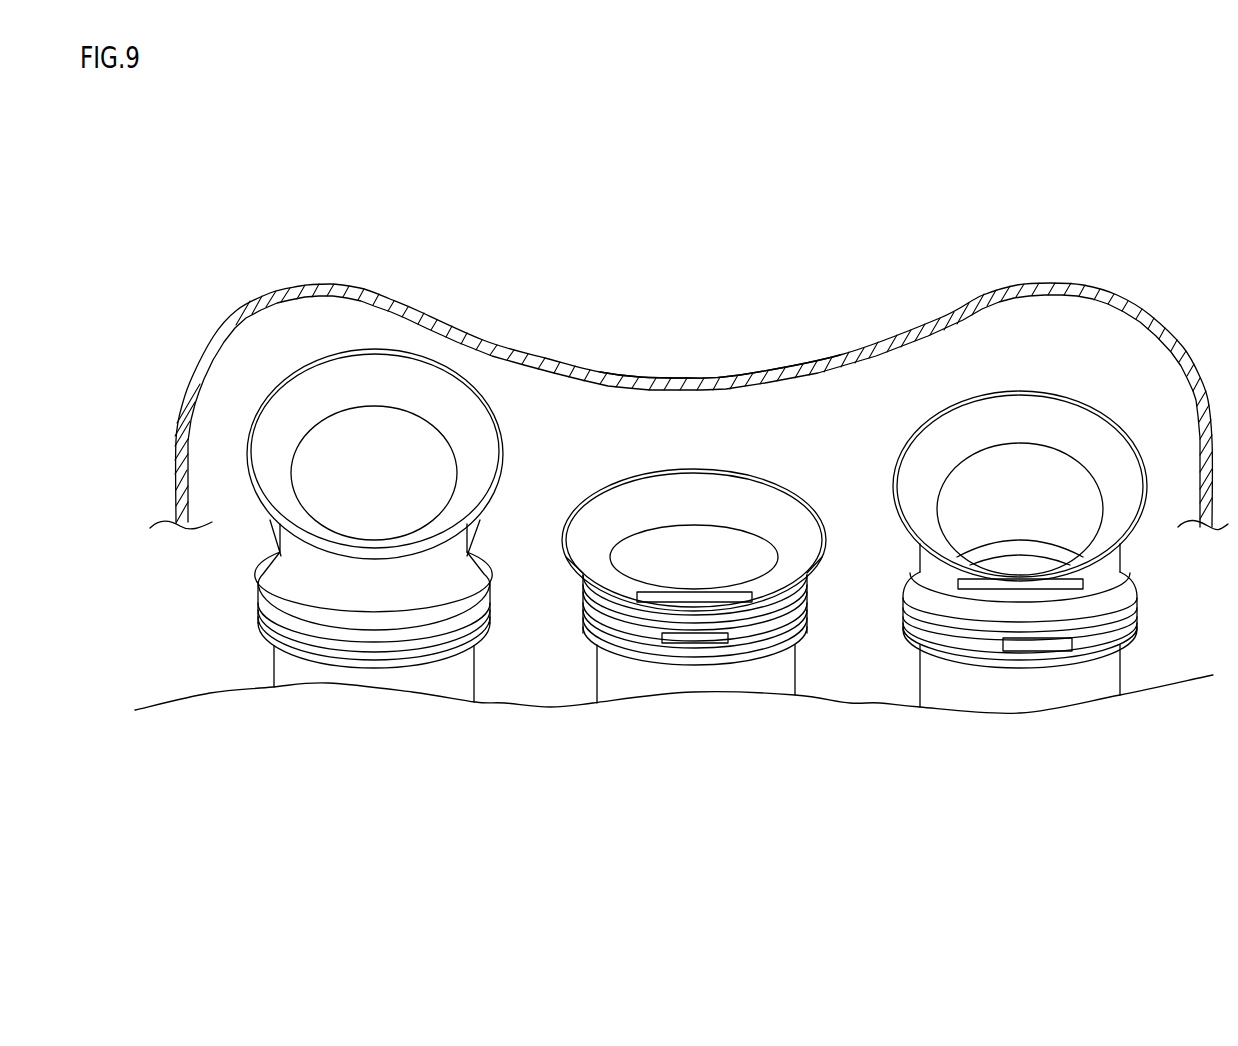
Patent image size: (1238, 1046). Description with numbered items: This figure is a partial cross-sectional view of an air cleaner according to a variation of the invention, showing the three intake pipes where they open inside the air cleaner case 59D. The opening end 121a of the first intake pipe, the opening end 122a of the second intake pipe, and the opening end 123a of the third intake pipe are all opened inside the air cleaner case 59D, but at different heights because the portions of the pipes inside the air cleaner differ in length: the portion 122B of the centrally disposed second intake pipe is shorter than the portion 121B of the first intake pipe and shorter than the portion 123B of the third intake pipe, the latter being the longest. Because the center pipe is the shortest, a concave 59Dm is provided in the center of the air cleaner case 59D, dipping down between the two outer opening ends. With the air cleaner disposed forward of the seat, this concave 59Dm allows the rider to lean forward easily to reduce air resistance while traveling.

The air cleaner case 59D is at (262, 301).
The concave 59Dm is at (728, 368).
The opening end of the first intake pipe 121a is at (1057, 392).
The opening end of the second intake pipe 122a is at (690, 468).
The opening end of the third intake pipe 123a is at (385, 352).
The portion of the first intake pipe located inside of the air cleaner 121B is at (920, 677).
The portion of the second intake pipe located inside of the air cleaner 122B is at (593, 677).
The portion of the third intake pipe located inside of the air cleaner 123B is at (273, 665).